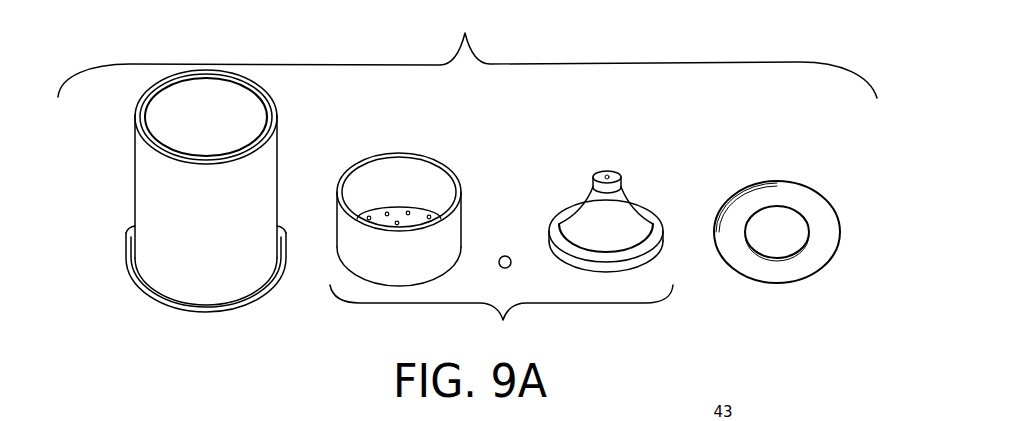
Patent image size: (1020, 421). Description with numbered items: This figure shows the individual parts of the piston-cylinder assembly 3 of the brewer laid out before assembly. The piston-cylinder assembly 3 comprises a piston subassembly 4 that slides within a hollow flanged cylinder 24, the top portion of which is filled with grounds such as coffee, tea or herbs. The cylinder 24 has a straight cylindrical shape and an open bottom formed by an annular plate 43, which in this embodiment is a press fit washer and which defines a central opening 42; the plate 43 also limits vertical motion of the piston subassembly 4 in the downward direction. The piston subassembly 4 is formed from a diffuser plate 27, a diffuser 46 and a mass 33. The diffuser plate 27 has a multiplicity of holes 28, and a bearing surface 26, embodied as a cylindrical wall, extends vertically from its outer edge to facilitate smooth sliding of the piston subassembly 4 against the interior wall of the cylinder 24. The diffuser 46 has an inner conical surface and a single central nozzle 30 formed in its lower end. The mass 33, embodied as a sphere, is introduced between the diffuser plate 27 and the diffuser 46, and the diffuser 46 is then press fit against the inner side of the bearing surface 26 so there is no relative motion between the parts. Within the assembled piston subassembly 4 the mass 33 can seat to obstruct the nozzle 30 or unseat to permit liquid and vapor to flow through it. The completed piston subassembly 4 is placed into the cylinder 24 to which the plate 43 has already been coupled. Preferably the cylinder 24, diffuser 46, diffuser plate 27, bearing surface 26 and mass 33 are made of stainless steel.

The piston-cylinder assembly 3 is at (467, 54).
The piston subassembly 4 is at (501, 315).
The hollow flanged cylinder 24 is at (135, 165).
The bearing surface 26 is at (369, 158).
The diffuser plate 27 is at (398, 207).
The holes 28 is at (371, 214).
The nozzle 30 is at (607, 175).
The mass 33 is at (505, 256).
The central opening 42 is at (793, 240).
The annular plate 43 is at (773, 180).
The diffuser 46 is at (553, 200).